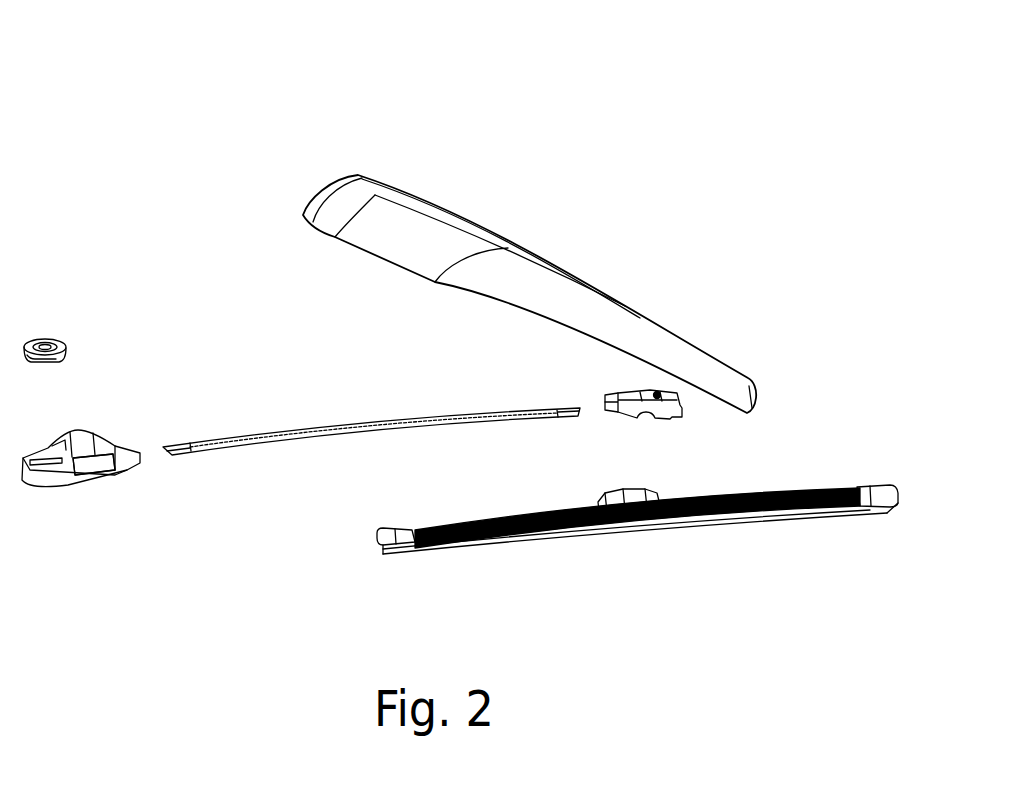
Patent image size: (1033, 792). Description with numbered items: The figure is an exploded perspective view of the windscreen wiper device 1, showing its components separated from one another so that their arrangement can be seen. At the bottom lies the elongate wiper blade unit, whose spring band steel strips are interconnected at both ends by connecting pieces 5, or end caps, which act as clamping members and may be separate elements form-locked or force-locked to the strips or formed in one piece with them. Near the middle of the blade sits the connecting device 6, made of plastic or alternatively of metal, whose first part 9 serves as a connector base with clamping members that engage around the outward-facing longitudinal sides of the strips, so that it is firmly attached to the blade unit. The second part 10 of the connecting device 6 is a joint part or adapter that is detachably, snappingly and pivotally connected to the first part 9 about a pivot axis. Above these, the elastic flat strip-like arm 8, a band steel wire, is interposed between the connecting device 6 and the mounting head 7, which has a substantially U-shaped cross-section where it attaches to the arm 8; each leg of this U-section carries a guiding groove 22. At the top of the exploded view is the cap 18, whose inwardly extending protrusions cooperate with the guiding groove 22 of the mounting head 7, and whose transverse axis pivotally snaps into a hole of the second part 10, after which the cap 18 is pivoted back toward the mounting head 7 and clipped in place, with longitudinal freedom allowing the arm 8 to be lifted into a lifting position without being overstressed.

The windscreen wiper device 1 is at (566, 162).
The connecting pieces 5 is at (375, 537).
The connecting device 6 is at (659, 425).
The mounting head 7 is at (48, 480).
The arm 8 is at (390, 423).
The first part 9 is at (665, 521).
The second part 10 is at (613, 393).
The cap 18 is at (603, 303).
The guiding groove 22 is at (105, 463).